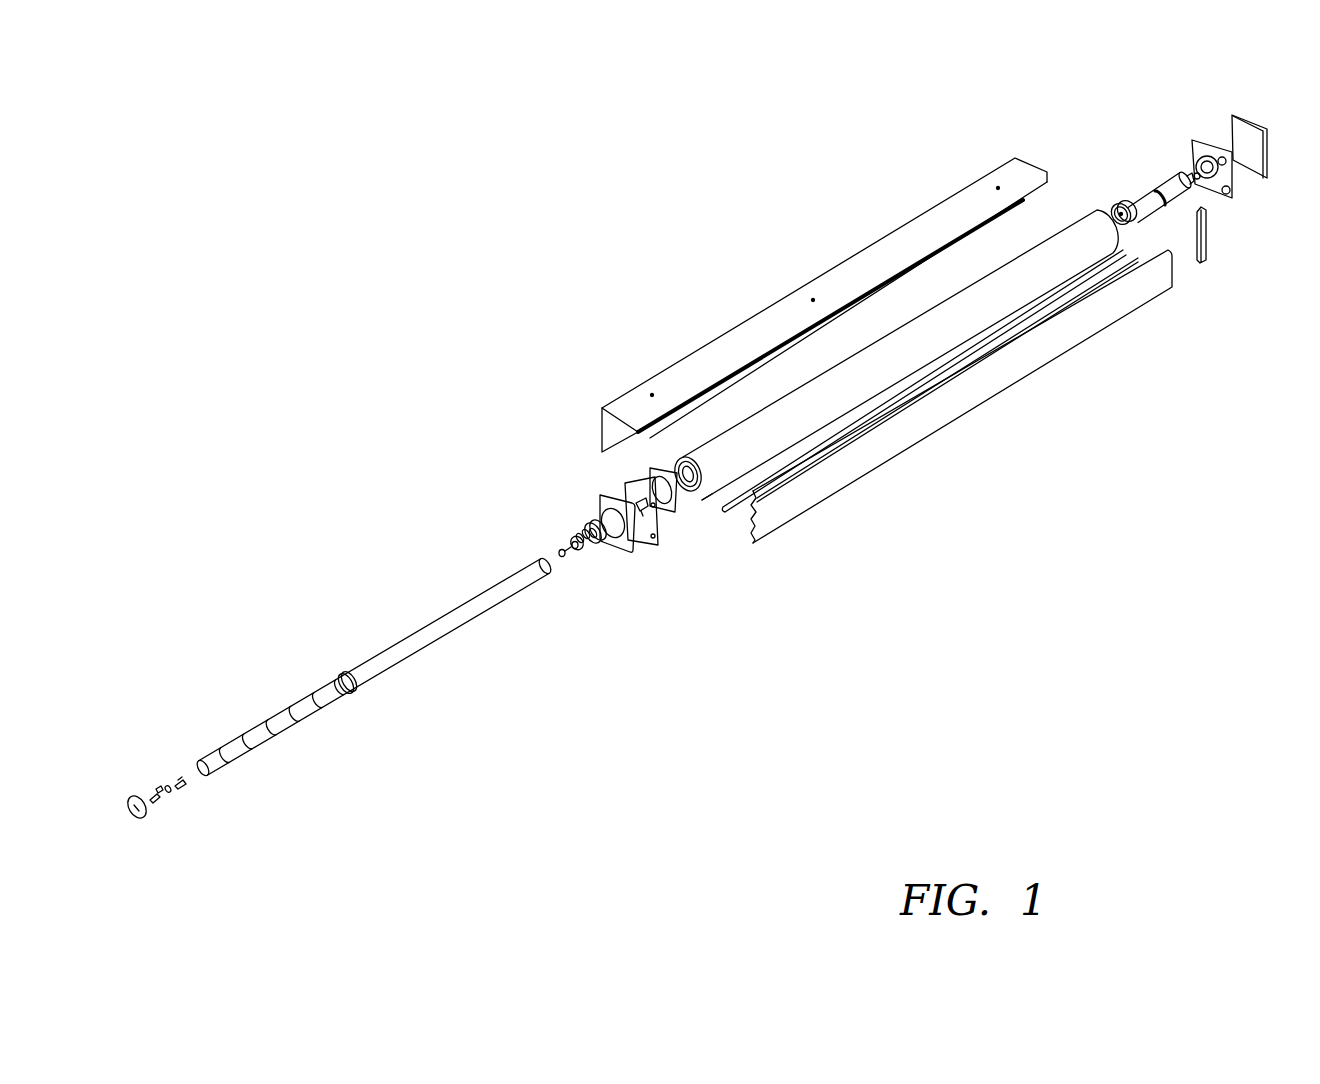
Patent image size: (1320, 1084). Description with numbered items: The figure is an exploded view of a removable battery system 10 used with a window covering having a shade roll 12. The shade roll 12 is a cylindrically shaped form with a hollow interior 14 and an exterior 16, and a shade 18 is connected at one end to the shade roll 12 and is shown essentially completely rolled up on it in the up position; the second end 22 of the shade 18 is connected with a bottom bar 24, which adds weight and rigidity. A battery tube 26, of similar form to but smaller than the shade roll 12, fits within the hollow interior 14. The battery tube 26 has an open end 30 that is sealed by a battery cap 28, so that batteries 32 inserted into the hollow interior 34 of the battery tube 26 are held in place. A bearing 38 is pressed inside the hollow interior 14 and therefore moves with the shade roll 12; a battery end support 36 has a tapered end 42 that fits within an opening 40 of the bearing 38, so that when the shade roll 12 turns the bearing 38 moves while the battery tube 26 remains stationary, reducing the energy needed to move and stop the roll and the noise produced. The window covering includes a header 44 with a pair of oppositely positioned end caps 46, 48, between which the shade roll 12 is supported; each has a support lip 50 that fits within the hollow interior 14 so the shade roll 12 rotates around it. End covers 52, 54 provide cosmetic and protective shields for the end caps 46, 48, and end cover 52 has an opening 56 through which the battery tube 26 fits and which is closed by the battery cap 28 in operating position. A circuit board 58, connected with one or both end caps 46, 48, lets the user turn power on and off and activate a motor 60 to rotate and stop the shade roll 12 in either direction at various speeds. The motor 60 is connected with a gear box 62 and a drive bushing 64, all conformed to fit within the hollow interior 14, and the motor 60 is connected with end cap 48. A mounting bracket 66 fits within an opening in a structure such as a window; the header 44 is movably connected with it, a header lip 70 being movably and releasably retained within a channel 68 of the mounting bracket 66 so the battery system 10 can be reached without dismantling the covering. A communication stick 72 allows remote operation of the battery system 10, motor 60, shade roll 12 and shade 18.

The removable battery system 10 is at (300, 543).
The shade roll 12 is at (688, 492).
The hollow interior 14 is at (663, 464).
The exterior 16 is at (683, 492).
The shade 18 is at (770, 452).
The second end 22 is at (731, 468).
The bottom bar 24 is at (706, 512).
The battery tube 26 is at (400, 663).
The battery cap 28 is at (142, 822).
The open end 30 is at (344, 673).
The batteries 32 is at (307, 722).
The hollow interior 34 is at (346, 700).
The battery end support 36 is at (583, 556).
The bearing 38 is at (580, 526).
The opening 40 is at (572, 533).
The tapered end 42 is at (591, 547).
The header 44 is at (952, 400).
The end cap 46 is at (625, 488).
The end cap 48 is at (1195, 142).
The support lip 50 is at (1197, 156).
The end cover 52 is at (588, 566).
The end cover 54 is at (1257, 165).
The opening 56 is at (615, 545).
The circuit board 58 is at (648, 478).
The motor 60 is at (1160, 180).
The gear box 62 is at (1150, 213).
The drive bushing 64 is at (1116, 206).
The mounting bracket 66 is at (858, 272).
The channel 68 is at (640, 413).
The header lip 70 is at (777, 490).
The communication stick 72 is at (1202, 257).